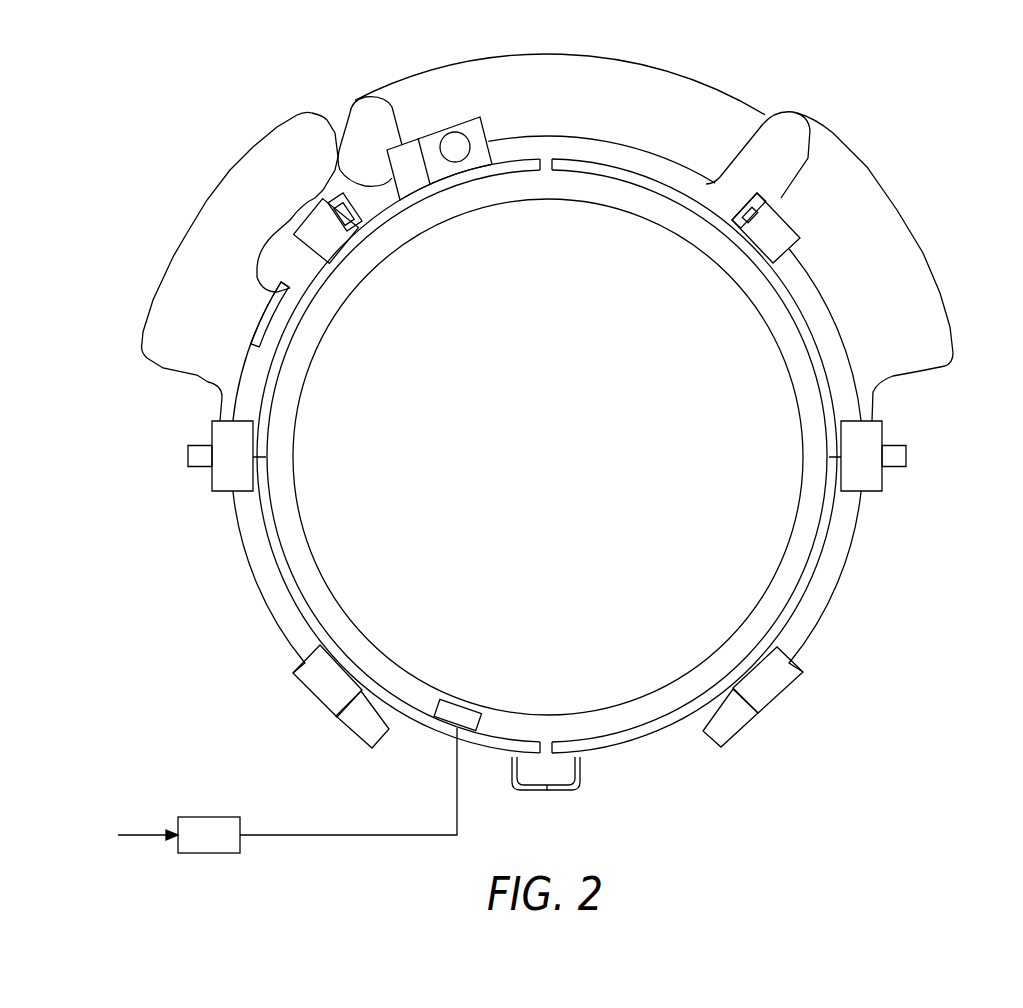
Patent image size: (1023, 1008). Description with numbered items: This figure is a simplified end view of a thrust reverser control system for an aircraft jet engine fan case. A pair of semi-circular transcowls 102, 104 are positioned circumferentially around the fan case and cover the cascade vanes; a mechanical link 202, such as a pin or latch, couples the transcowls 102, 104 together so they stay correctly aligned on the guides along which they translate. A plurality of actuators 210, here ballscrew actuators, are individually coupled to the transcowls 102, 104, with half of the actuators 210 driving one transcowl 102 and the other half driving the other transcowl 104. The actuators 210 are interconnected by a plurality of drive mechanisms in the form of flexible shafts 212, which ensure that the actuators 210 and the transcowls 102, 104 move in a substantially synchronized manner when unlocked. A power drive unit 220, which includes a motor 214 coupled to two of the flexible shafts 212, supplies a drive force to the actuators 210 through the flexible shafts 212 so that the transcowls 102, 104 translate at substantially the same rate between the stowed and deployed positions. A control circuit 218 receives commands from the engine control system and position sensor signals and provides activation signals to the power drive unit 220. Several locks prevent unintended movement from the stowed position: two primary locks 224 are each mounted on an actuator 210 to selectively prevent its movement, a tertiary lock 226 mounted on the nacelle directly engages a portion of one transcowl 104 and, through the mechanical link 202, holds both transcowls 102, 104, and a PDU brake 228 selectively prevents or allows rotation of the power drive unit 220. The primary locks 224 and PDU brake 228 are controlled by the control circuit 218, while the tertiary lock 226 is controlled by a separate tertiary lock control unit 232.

The transcowl 102 is at (815, 548).
The transcowl 104 is at (272, 548).
The mechanical link 202 is at (560, 790).
The actuator 210 is at (304, 226).
The flexible shaft 212 is at (645, 145).
The motor 214 is at (472, 140).
The control circuit 218 is at (262, 340).
The power drive unit 220 is at (455, 108).
The primary lock 224 is at (357, 232).
The tertiary lock 226 is at (463, 702).
The PDU brake 228 is at (413, 182).
The tertiary lock control unit 232 is at (205, 818).